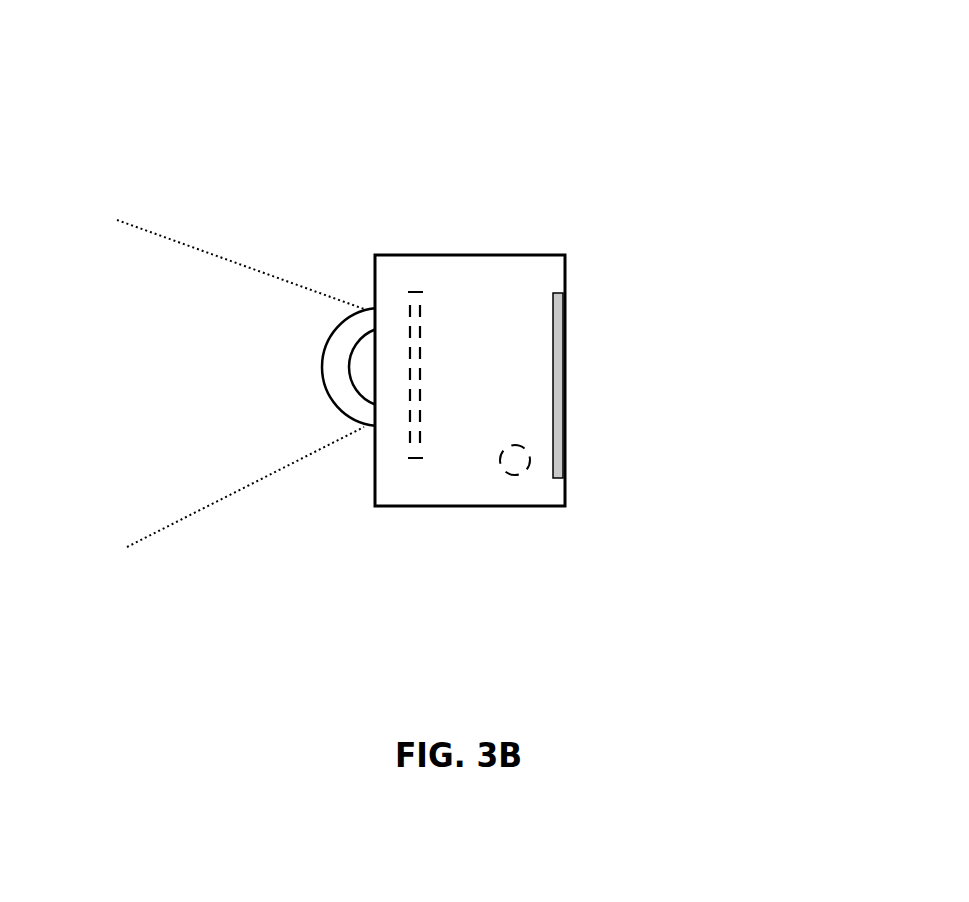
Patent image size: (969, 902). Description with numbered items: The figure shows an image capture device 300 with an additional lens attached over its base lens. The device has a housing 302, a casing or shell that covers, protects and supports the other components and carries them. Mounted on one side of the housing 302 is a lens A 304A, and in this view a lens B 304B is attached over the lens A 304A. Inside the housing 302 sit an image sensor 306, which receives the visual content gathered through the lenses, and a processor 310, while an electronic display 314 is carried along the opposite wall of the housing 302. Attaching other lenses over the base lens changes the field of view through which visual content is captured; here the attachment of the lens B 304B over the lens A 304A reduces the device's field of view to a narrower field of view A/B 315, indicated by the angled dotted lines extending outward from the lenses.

The image capture device 300 is at (530, 123).
The housing 302 is at (440, 507).
The lens A 304A is at (350, 427).
The lens B 304B is at (330, 338).
The image sensor 306 is at (417, 292).
The processor 310 is at (507, 475).
The electronic display 314 is at (567, 380).
The field of view A/B 315 is at (243, 278).